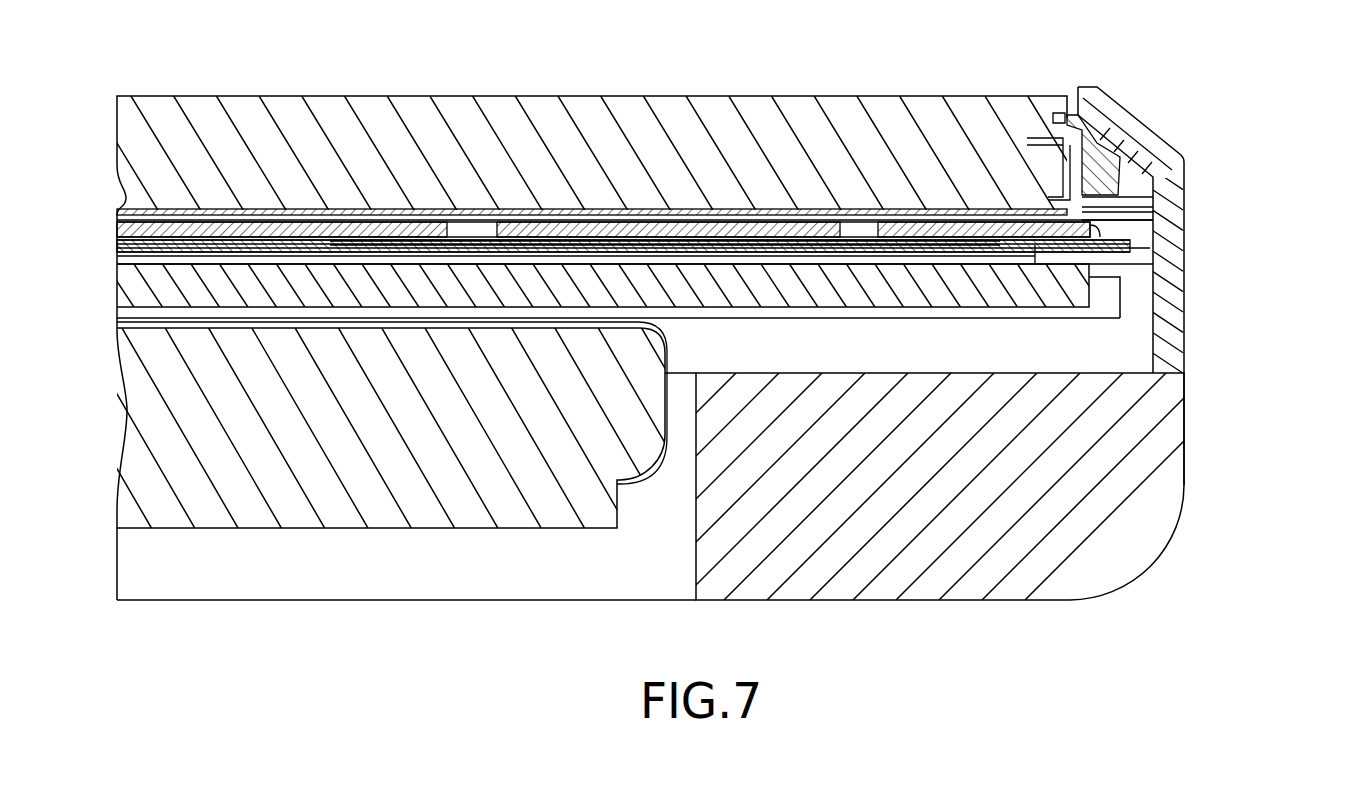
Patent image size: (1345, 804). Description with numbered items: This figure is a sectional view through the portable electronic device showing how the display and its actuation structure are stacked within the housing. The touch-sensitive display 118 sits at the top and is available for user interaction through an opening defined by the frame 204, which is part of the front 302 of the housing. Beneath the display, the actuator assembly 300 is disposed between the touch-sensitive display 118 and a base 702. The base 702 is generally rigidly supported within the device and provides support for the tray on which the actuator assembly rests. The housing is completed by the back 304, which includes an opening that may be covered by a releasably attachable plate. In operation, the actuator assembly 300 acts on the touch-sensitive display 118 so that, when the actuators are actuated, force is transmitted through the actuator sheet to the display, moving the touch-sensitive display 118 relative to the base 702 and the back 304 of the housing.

The touch-sensitive display 118 is at (872, 95).
The frame 204 is at (1080, 87).
The front 302 is at (1183, 213).
The actuator assembly 300 is at (1150, 222).
The base 702 is at (1077, 297).
The back 304 is at (1030, 601).